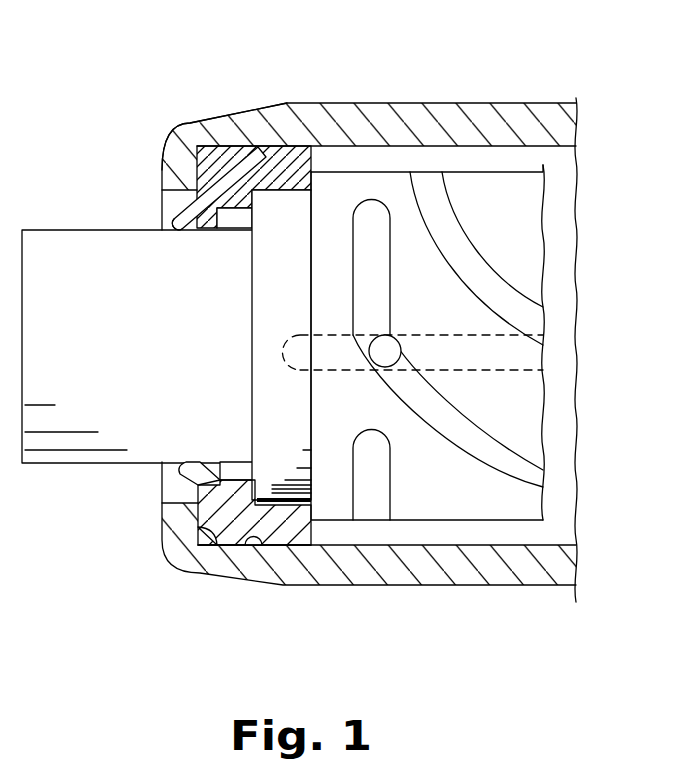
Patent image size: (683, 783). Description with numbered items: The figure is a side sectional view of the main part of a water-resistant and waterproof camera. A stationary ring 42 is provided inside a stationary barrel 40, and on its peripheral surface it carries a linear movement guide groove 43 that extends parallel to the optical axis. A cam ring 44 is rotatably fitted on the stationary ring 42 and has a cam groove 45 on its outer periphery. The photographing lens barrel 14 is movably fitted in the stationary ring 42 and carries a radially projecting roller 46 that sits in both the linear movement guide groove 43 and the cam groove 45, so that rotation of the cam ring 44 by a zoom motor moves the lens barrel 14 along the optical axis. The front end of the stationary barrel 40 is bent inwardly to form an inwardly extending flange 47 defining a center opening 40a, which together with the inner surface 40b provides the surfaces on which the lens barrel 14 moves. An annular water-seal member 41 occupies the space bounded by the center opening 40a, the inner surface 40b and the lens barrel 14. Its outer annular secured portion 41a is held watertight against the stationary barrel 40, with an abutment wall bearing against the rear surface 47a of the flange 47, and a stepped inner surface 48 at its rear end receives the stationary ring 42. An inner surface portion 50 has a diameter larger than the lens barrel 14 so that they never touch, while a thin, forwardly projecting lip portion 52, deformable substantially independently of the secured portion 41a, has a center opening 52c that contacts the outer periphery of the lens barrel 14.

The photographing lens barrel 14 is at (65, 238).
The stationary barrel 40 is at (468, 113).
The center opening 40a is at (165, 198).
The inner surface 40b is at (250, 540).
The annular water-seal member 41 is at (230, 152).
The outer annular secured portion 41a is at (287, 550).
The stationary ring 42 is at (287, 217).
The linear movement guide groove 43 is at (490, 370).
The cam ring 44 is at (520, 207).
The cam groove 45 is at (517, 477).
The roller 46 is at (383, 363).
The inwardly extending flange 47 is at (173, 523).
The rear surface 47a is at (200, 530).
The stepped inner surface 48 is at (266, 200).
The inner surface portion 50 is at (233, 229).
The lip portion 52 is at (187, 483).
The center opening 52c is at (182, 232).